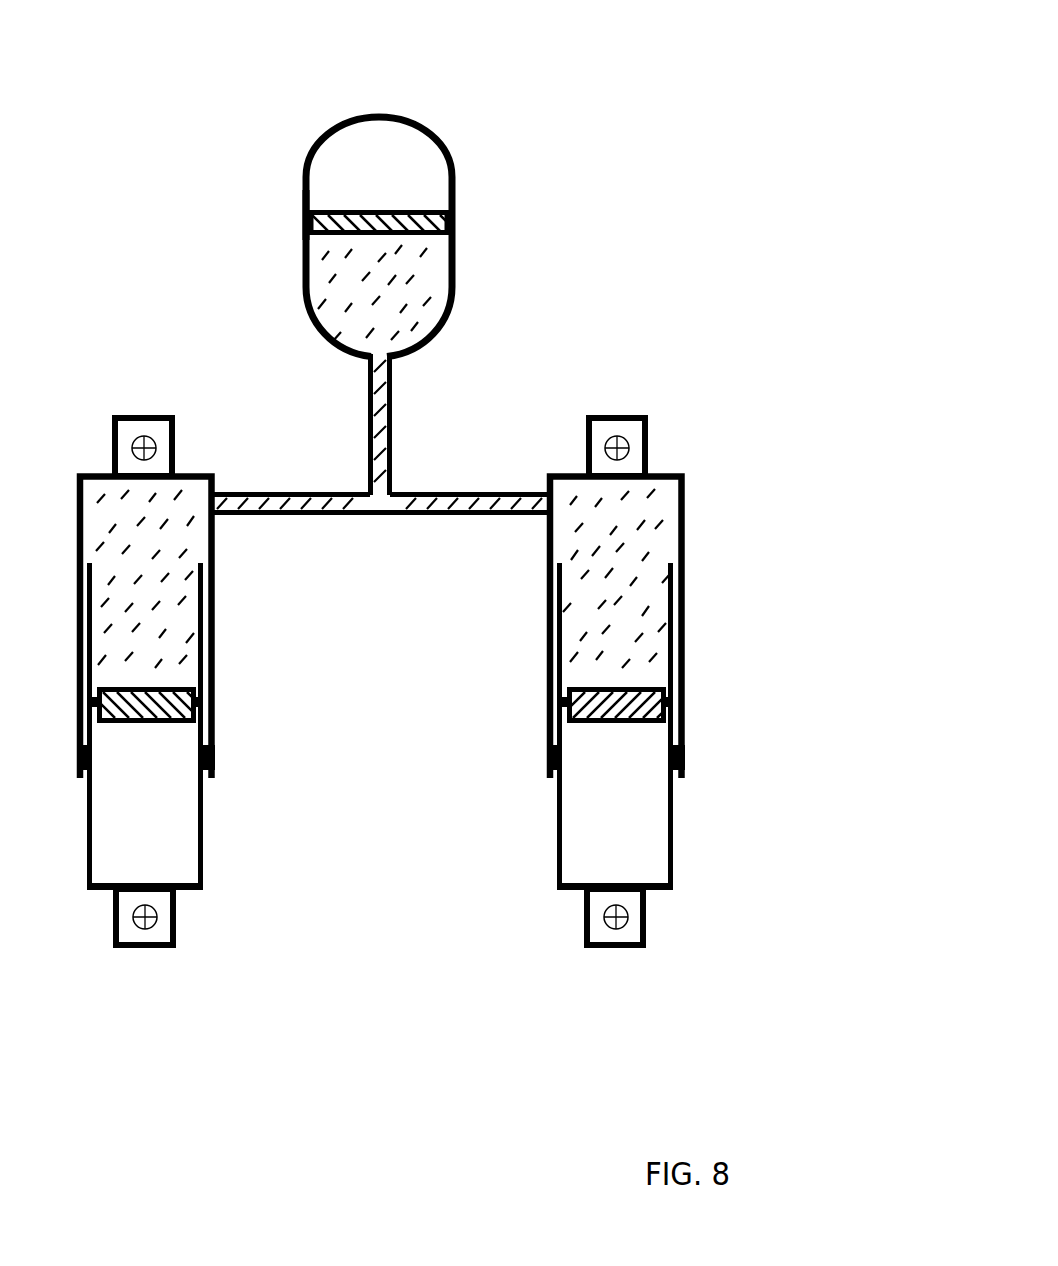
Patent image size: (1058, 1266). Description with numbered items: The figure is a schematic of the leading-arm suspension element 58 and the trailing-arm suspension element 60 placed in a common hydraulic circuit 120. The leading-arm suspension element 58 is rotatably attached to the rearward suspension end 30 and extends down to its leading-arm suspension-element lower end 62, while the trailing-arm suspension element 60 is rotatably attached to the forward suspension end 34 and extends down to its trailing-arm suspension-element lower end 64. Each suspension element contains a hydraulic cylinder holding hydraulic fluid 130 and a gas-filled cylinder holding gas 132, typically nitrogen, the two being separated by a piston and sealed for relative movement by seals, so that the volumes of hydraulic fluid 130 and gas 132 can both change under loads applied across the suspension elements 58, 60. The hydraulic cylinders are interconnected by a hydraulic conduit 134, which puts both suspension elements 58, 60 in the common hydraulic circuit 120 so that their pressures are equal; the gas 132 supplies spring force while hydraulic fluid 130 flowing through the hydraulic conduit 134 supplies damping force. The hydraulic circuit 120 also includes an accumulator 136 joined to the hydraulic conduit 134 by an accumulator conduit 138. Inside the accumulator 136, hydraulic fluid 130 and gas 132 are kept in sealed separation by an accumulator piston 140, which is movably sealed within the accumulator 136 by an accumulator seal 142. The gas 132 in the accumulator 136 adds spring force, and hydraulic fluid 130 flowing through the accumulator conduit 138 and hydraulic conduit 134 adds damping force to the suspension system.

The common hydraulic circuit 120 is at (620, 112).
The accumulator 136 is at (458, 180).
The accumulator seal 142 is at (306, 213).
The accumulator piston 140 is at (450, 216).
The accumulator conduit 138 is at (369, 373).
The hydraulic conduit 134 is at (322, 517).
The hydraulic fluid 130 is at (432, 299).
The gas 132 is at (396, 135).
The leading-arm suspension element 58 is at (164, 388).
The trailing-arm suspension element 60 is at (645, 380).
The forward suspension end 34 is at (150, 448).
The rearward suspension end 30 is at (625, 447).
The trailing-arm suspension-element lower end 64 is at (151, 921).
The leading-arm suspension-element lower end 62 is at (622, 922).